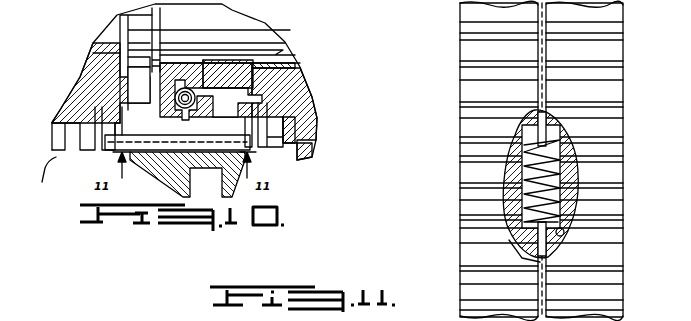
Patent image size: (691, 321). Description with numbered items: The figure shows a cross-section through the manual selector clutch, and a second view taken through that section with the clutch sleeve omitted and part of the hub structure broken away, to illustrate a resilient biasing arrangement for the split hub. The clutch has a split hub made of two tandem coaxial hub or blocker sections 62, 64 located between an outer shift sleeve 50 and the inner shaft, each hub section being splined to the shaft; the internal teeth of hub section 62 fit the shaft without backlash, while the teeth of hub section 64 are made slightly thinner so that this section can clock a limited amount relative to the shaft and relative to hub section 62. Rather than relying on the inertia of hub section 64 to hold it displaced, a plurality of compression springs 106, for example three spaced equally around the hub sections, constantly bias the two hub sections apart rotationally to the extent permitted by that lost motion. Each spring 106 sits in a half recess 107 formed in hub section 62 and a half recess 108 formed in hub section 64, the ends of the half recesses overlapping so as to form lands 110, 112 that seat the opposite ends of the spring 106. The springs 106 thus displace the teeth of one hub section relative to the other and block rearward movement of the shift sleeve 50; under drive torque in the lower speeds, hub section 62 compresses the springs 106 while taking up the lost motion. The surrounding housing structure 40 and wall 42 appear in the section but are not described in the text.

In FIG. 10, the housing 40 is at (302, 160).
In FIG. 10, the housing wall 42 is at (49, 169).
In FIG. 10, the shift sleeve 50 is at (168, 178).
In FIG. 10, the hub section 62 is at (116, 153).
In FIG. 11, the hub section 62 is at (472, 47).
In FIG. 10, the hub section 64 is at (140, 150).
In FIG. 11, the hub section 64 is at (620, 42).
In FIG. 10, the compression springs 106 is at (186, 92).
In FIG. 11, the compression springs 106 is at (560, 152).
In FIG. 10, the half recess 107 is at (176, 100).
In FIG. 11, the half recess 107 is at (527, 131).
In FIG. 10, the half recess 108 is at (210, 84).
In FIG. 11, the half recess 108 is at (566, 232).
In FIG. 11, the land 110 is at (515, 236).
In FIG. 11, the land 112 is at (560, 140).